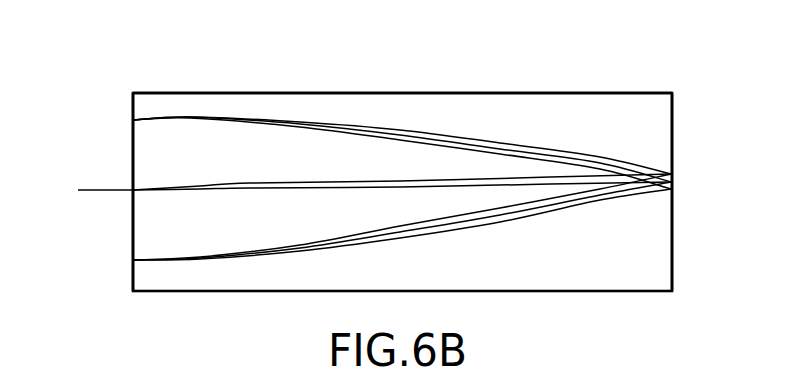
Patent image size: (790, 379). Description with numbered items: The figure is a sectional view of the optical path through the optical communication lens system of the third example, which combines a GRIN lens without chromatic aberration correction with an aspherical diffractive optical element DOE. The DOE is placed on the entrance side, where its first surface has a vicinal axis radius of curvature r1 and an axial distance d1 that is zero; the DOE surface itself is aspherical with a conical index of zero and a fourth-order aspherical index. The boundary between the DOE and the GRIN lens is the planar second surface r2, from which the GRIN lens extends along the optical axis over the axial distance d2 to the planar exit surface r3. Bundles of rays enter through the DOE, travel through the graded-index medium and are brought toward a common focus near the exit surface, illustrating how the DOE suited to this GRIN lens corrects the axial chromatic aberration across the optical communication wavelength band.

The radius of curvature of first surface r1 is at (133, 120).
The radius of curvature of second surface r2 is at (133, 93).
The radius of curvature of third surface r3 is at (672, 113).
The first axial distance d1 is at (135, 190).
The second axial distance d2 is at (350, 189).
The aspherical diffractive optical element DOE is at (133, 229).